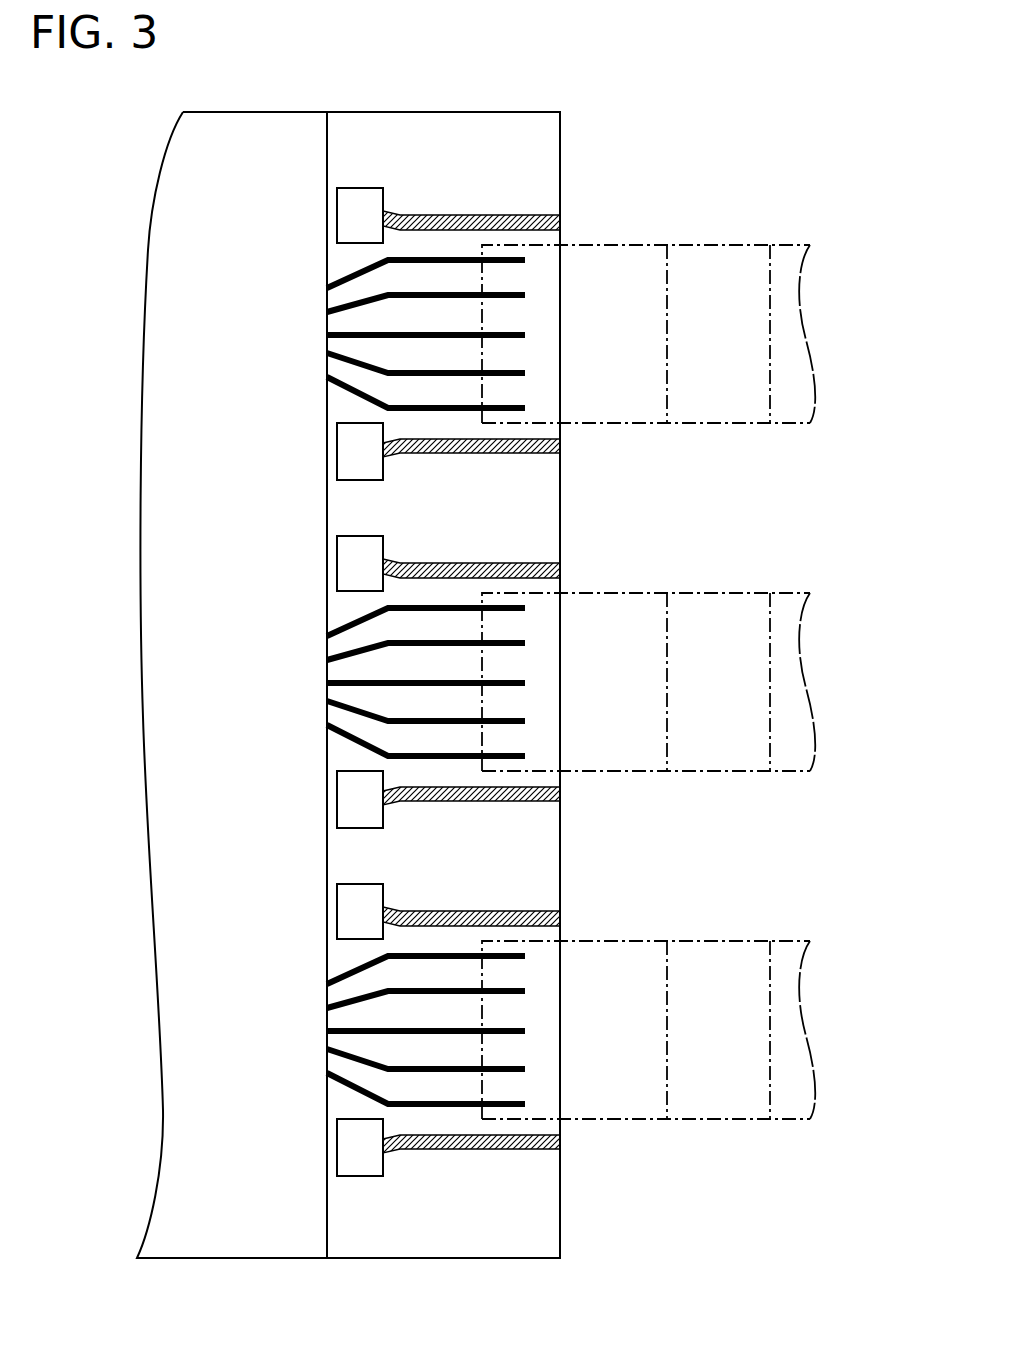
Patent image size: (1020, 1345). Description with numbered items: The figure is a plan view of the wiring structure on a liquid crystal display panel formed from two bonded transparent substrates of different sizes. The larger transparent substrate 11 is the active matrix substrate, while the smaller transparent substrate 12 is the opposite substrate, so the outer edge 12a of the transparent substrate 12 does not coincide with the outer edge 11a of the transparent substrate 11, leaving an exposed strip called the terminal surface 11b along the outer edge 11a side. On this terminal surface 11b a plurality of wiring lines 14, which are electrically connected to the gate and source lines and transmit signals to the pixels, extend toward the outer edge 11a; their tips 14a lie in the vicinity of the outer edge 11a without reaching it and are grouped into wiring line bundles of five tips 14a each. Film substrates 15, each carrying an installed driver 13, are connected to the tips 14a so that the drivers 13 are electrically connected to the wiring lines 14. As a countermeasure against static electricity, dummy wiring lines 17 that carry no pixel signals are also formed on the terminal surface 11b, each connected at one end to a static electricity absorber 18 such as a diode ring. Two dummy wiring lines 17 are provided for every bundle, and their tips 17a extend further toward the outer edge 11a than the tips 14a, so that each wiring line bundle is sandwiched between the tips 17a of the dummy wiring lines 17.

The transparent substrate 11 is at (430, 112).
The outer edge 11a is at (562, 145).
The terminal surface 11b is at (498, 136).
The transparent substrate 12 is at (240, 112).
The outer edge 12a is at (330, 140).
The driver 13 is at (667, 280).
The wiring line 14 is at (327, 288).
The tip 14a is at (527, 260).
The film substrate 15 is at (777, 245).
The dummy wiring line 17 is at (433, 215).
The tip 17a is at (556, 215).
The static electricity absorber 18 is at (355, 215).